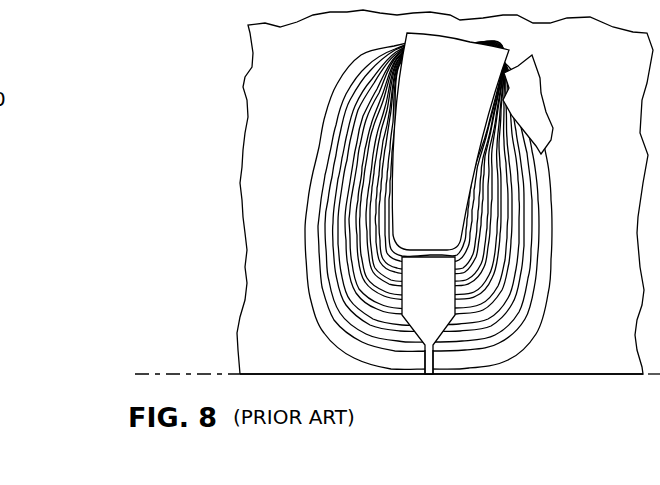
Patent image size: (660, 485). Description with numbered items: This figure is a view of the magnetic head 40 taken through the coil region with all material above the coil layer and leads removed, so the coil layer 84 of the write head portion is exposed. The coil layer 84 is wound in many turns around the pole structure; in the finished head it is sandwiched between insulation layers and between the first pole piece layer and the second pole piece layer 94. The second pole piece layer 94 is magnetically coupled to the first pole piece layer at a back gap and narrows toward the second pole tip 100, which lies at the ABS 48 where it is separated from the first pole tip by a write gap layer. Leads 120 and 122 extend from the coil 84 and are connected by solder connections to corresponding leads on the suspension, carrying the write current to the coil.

The magnetic head 40 is at (572, 185).
The ABS 48 is at (190, 373).
The coil layer 84 is at (527, 277).
The second pole piece layer 94 is at (440, 304).
The second pole tip 100 is at (427, 376).
The lead 120 is at (451, 138).
The lead 122 is at (542, 97).